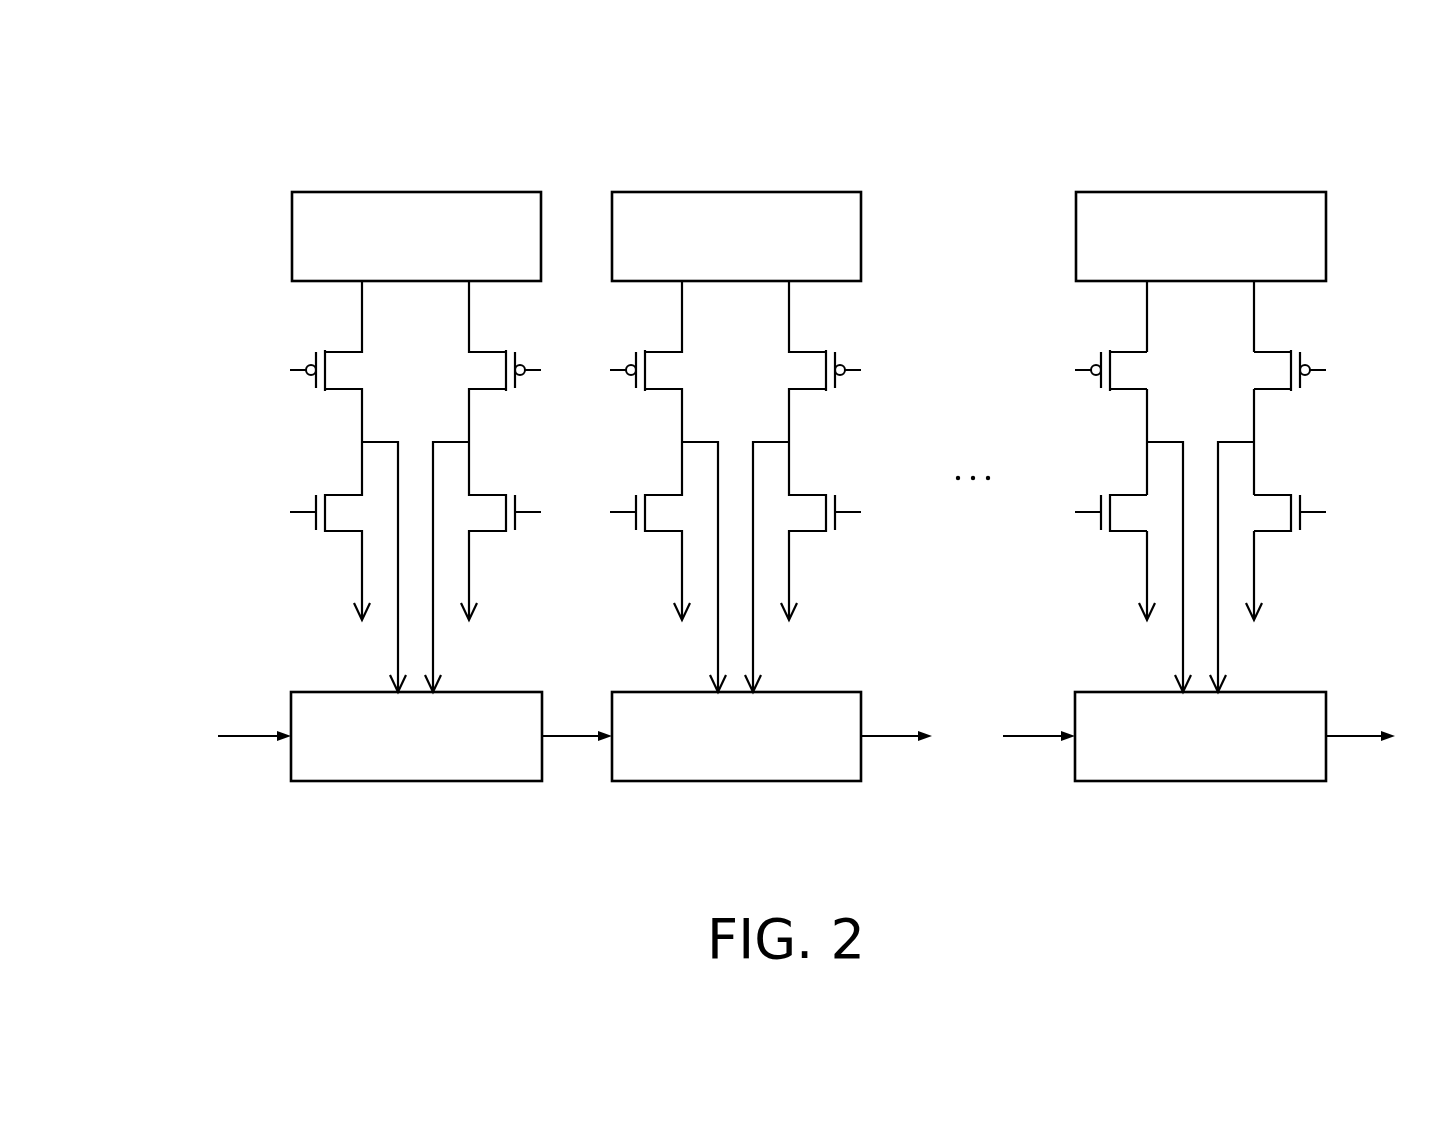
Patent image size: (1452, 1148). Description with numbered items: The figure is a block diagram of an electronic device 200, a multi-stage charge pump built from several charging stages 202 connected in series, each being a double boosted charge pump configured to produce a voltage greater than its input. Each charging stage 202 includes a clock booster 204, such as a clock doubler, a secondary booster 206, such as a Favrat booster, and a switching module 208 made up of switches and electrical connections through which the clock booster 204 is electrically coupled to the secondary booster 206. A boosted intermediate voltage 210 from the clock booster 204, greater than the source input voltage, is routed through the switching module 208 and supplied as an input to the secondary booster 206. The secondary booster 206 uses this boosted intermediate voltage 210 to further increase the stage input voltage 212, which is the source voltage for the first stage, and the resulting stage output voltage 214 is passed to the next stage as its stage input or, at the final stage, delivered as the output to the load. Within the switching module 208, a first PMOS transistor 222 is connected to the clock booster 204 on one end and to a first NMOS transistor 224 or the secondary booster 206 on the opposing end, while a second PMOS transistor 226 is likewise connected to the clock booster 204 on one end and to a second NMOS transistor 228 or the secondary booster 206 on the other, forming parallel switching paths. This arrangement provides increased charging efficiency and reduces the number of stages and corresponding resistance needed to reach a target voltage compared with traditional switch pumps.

The electronic device 200 is at (416, 100).
The charging stage 202 is at (542, 797).
The clock booster 204 is at (528, 247).
The secondary booster 206 is at (502, 762).
The switching module 208 is at (283, 283).
The boosted intermediate voltage 210 is at (1302, 647).
The stage input voltage 212 is at (262, 736).
The stage output voltage 214 is at (581, 737).
The first PMOS transistor 222 is at (1126, 350).
The first NMOS transistor 224 is at (1125, 495).
The second PMOS transistor 226 is at (1274, 350).
The second NMOS transistor 228 is at (1276, 495).